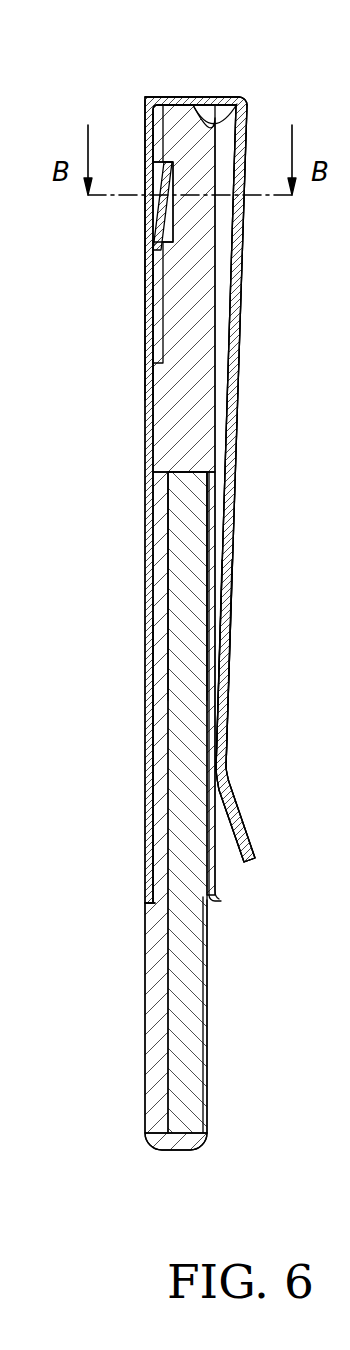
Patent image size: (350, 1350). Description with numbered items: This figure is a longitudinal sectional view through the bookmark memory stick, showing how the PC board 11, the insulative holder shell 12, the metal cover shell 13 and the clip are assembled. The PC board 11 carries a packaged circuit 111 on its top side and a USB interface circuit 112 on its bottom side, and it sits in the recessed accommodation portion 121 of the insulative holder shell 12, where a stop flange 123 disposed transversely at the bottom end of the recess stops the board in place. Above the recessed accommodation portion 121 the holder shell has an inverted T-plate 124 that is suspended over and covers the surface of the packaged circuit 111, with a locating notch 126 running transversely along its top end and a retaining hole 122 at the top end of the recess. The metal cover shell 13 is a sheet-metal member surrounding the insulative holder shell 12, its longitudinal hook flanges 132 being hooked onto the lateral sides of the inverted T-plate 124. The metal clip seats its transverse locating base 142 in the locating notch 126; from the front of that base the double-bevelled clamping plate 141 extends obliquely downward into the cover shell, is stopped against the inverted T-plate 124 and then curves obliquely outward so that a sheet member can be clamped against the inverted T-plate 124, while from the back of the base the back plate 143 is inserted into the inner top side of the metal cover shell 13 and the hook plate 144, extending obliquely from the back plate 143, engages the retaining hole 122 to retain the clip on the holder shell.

The PC board 11 is at (170, 969).
The packaged circuit 111 is at (185, 636).
The USB interface circuit 112 is at (205, 1018).
The insulative holder shell 12 is at (187, 402).
The recessed accommodation portion 121 is at (170, 795).
The retaining hole 122 is at (170, 230).
The stop flange 123 is at (165, 1141).
The inverted T-plate 124 is at (210, 582).
The locating notch 126 is at (238, 104).
The metal cover shell 13 is at (150, 533).
The longitudinal hook flanges 132 is at (329, 481).
The double-bevelled clamping plate 141 is at (232, 380).
The transverse locating base 142 is at (215, 100).
The back plate 143 is at (150, 283).
The hook plate 144 is at (165, 182).